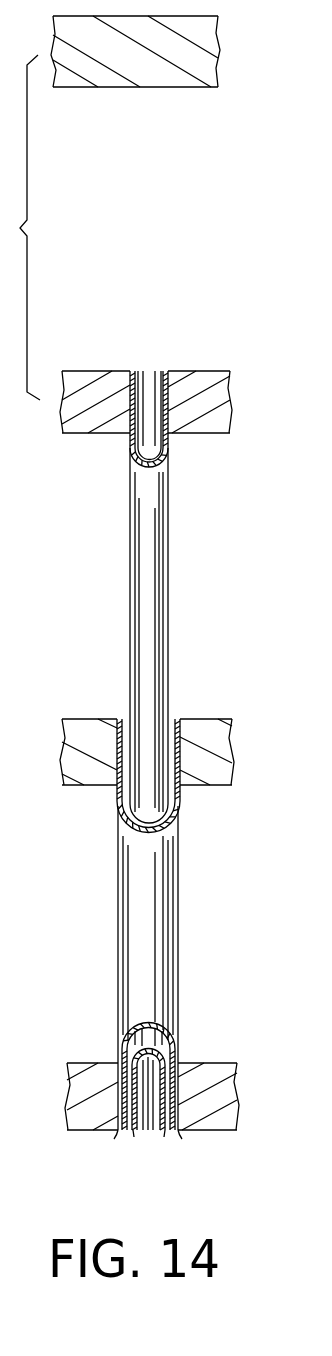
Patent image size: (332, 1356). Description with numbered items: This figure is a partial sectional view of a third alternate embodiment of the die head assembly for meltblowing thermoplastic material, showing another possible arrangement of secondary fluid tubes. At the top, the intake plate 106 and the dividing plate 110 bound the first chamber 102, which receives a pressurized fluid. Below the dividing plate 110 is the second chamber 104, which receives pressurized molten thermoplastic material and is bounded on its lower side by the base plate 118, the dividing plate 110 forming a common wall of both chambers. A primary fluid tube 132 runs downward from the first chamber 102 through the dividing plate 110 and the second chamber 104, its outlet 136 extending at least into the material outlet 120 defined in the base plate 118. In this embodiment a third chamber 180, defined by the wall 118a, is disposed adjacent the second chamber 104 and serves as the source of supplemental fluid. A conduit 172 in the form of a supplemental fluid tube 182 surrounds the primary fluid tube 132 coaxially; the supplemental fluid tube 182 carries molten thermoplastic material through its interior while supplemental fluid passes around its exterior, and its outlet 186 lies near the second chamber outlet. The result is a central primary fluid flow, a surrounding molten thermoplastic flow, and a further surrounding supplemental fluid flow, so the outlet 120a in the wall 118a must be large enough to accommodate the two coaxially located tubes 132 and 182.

The intake plate 106 is at (216, 42).
The first chamber 102 is at (147, 267).
The dividing plate 110 is at (222, 398).
The fluid tube 132 is at (168, 556).
The second chamber 104 is at (112, 615).
The material outlet 120 is at (173, 718).
The base plate 118 is at (222, 743).
The conduit 172 is at (185, 968).
The supplemental fluid tube 182 is at (173, 907).
The third chamber 180 is at (107, 939).
The wall 118a is at (236, 1096).
The outlet 186 is at (122, 1132).
The outlet 136 is at (135, 1130).
The outlet 120a is at (182, 1130).